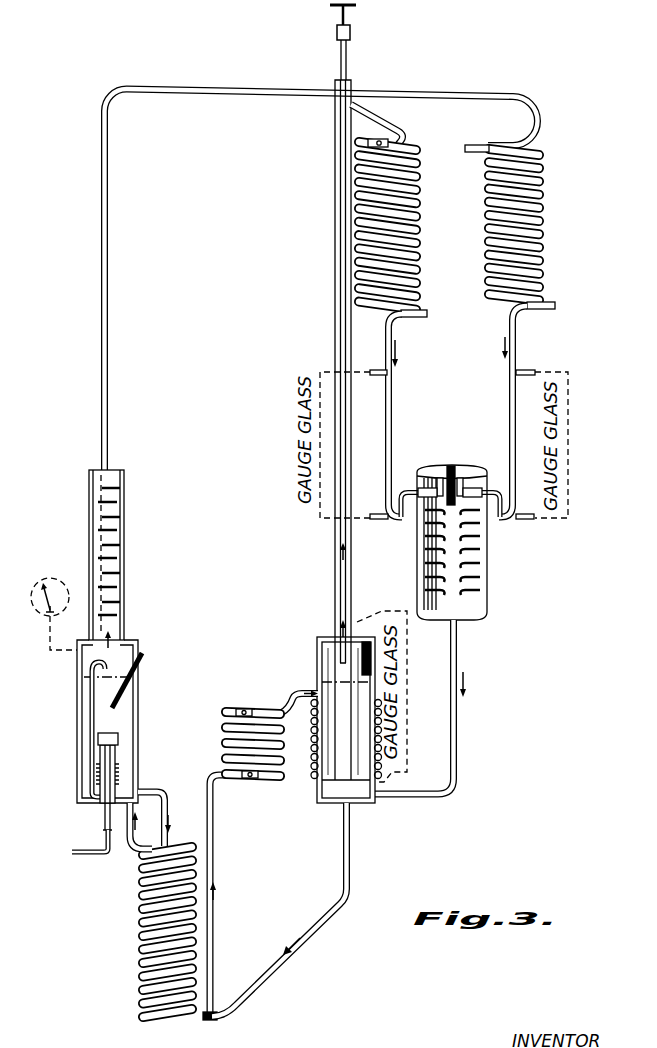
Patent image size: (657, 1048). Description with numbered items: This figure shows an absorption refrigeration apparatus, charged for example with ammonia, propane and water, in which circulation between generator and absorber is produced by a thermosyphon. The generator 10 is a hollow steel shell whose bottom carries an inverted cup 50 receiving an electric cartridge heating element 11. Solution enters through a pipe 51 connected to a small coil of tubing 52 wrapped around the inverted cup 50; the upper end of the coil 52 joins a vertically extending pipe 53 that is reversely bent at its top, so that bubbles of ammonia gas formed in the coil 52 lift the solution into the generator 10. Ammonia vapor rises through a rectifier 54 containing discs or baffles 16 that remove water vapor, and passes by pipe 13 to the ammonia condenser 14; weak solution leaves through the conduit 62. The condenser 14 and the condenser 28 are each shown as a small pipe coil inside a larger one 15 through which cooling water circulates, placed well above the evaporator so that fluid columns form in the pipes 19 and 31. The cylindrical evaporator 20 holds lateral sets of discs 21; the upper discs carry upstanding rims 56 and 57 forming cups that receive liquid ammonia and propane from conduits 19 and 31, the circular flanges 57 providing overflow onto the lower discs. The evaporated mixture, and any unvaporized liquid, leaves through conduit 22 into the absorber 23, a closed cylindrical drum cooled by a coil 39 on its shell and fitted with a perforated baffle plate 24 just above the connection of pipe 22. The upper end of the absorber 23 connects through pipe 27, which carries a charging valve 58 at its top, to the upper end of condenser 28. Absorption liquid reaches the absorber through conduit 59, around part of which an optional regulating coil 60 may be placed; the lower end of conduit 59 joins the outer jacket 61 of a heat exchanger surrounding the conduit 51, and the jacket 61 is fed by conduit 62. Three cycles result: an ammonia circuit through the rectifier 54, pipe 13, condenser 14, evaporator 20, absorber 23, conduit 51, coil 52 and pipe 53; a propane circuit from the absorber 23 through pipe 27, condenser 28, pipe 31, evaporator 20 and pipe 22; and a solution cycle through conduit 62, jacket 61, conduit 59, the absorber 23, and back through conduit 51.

The generator 10 is at (138, 703).
The electric cartridge heating element 11 is at (118, 748).
The pipe 13 is at (100, 275).
The ammonia condenser 14 is at (548, 178).
The larger coil 15 is at (531, 310).
The discs or baffles 16 is at (125, 492).
The conduit 19 is at (510, 398).
The evaporator 20 is at (488, 590).
The discs 21 is at (420, 588).
The conduit 22 is at (458, 748).
The absorber 23 is at (317, 648).
The perforated baffle plate 24 is at (330, 805).
The pipe 27 is at (335, 582).
The condenser 28 is at (420, 215).
The pipe 31 is at (392, 420).
The coil 39 is at (312, 776).
The inverted cup 50 is at (116, 772).
The pipe 51 is at (131, 852).
The coil of tubing 52 is at (78, 800).
The vertically extending pipe 53 is at (90, 707).
The rectifier 54 is at (121, 568).
The upstanding rim 56 is at (441, 478).
The flange 57 is at (420, 488).
The valve 58 is at (349, 67).
The conduit 59 is at (290, 694).
The regulating coil 60 is at (228, 712).
The outer jacket 61 is at (186, 849).
The conduit 62 is at (164, 805).